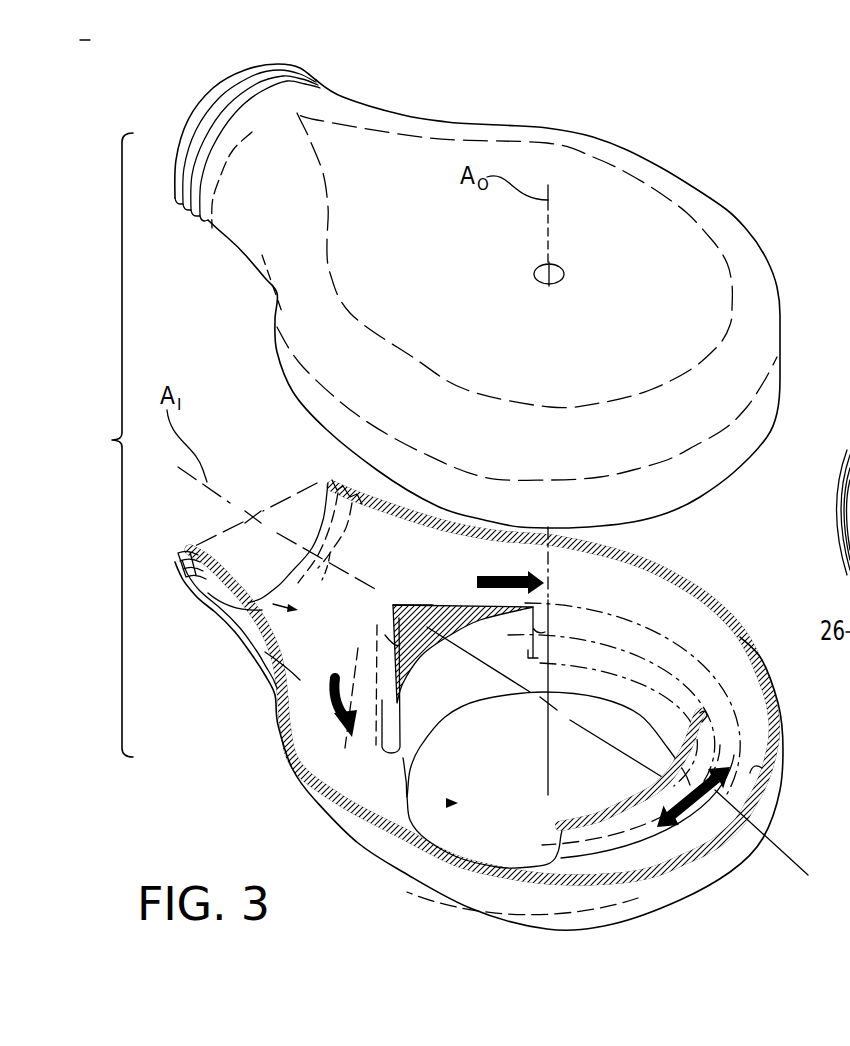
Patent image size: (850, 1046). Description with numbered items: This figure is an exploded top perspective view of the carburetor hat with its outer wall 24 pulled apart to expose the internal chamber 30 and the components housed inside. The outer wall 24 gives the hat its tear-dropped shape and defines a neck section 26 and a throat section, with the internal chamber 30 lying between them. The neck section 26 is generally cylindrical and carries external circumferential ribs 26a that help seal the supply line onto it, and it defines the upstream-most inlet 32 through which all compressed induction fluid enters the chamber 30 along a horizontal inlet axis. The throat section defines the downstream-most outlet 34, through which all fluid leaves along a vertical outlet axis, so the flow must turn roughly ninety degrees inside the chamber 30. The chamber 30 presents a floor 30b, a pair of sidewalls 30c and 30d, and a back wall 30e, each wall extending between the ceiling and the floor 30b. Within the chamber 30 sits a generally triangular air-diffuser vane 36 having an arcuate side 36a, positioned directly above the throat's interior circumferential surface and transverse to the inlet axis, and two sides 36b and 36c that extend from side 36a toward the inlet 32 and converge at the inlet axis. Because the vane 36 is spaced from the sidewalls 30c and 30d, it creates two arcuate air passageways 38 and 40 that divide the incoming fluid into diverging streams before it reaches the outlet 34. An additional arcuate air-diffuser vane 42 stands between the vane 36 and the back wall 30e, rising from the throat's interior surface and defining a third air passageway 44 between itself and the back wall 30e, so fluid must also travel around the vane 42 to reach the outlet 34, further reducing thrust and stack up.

The outer wall 24 is at (682, 242).
The neck section 26 is at (208, 594).
The external circumferential ribs 26a is at (186, 573).
The internal chamber 30 is at (240, 612).
The floor 30b is at (362, 608).
The sidewall 30c is at (298, 747).
The sidewall 30d is at (640, 595).
The back wall 30e is at (763, 772).
The inlet 32 is at (222, 519).
The outlet 34 is at (447, 802).
The air-diffuser vane 36 is at (447, 623).
The side 36a is at (457, 695).
The side 36b is at (385, 635).
The side 36c is at (433, 604).
The air passageway 38 is at (334, 678).
The air passageway 40 is at (477, 582).
The additional air-diffuser vane 42 is at (598, 812).
The third air passageway 44 is at (730, 797).